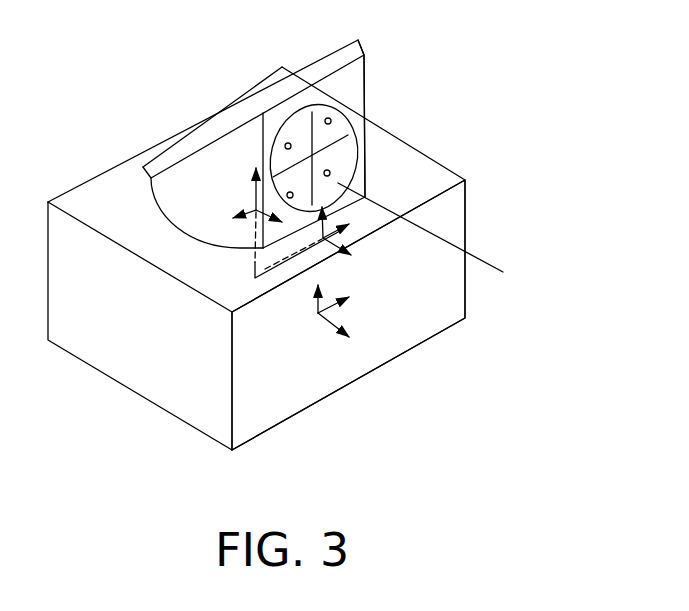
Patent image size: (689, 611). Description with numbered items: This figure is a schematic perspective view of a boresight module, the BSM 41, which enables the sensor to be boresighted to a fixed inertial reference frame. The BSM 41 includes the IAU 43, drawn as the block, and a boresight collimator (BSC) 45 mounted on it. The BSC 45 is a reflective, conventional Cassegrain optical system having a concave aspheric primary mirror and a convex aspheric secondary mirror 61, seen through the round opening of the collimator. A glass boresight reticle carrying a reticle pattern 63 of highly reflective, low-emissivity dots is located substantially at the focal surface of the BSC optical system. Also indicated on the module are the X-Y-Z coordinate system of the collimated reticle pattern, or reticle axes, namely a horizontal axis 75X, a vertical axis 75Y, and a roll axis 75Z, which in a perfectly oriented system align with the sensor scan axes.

The boresight module 41 is at (494, 159).
The IAU 43 is at (303, 373).
The boresight collimator 45 is at (357, 103).
The secondary mirror 61 is at (342, 162).
The reticle pattern 63 is at (331, 121).
The horizontal axis 75X is at (323, 240).
The vertical axis 75Y is at (255, 262).
The roll axis 75Z is at (318, 313).